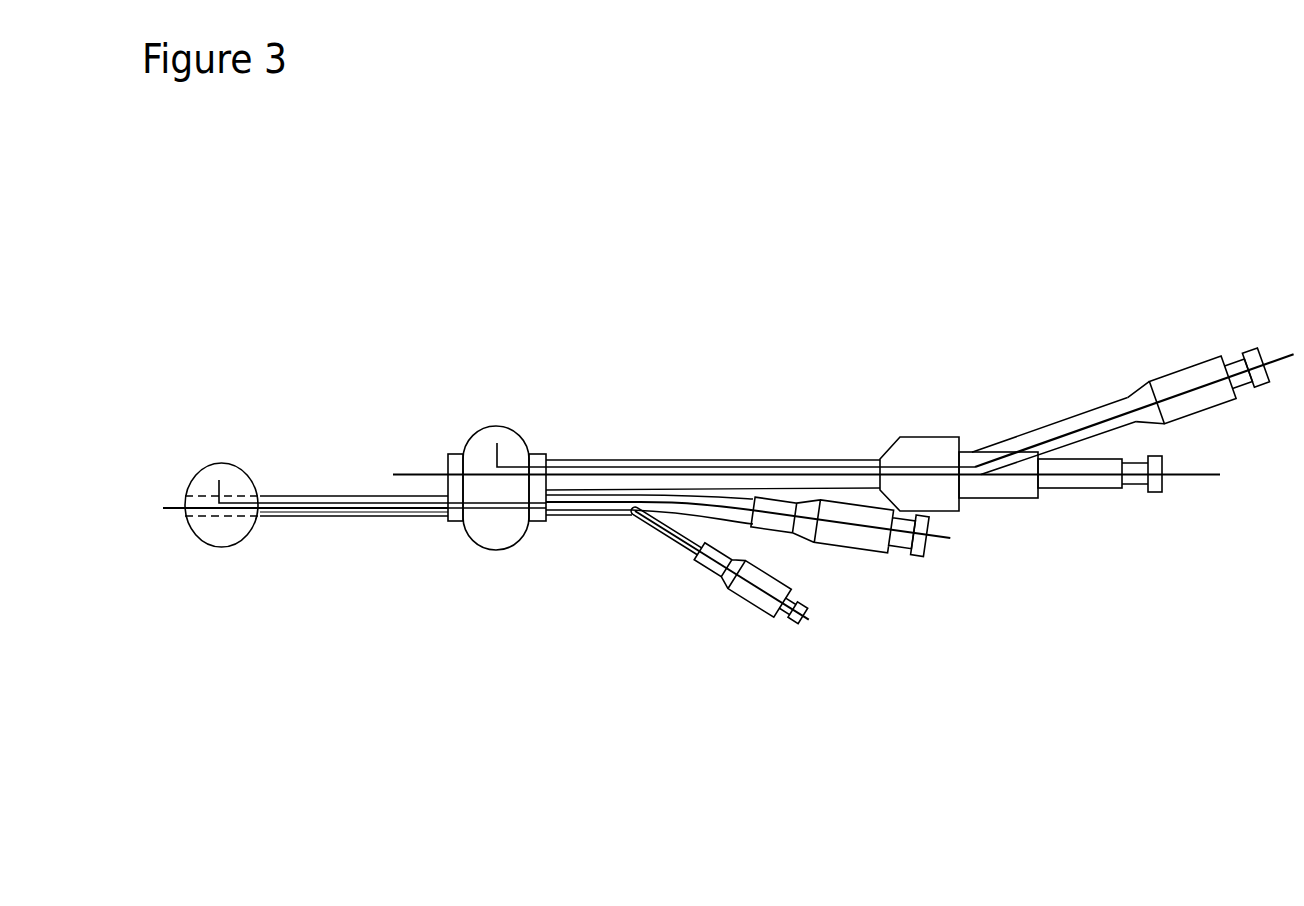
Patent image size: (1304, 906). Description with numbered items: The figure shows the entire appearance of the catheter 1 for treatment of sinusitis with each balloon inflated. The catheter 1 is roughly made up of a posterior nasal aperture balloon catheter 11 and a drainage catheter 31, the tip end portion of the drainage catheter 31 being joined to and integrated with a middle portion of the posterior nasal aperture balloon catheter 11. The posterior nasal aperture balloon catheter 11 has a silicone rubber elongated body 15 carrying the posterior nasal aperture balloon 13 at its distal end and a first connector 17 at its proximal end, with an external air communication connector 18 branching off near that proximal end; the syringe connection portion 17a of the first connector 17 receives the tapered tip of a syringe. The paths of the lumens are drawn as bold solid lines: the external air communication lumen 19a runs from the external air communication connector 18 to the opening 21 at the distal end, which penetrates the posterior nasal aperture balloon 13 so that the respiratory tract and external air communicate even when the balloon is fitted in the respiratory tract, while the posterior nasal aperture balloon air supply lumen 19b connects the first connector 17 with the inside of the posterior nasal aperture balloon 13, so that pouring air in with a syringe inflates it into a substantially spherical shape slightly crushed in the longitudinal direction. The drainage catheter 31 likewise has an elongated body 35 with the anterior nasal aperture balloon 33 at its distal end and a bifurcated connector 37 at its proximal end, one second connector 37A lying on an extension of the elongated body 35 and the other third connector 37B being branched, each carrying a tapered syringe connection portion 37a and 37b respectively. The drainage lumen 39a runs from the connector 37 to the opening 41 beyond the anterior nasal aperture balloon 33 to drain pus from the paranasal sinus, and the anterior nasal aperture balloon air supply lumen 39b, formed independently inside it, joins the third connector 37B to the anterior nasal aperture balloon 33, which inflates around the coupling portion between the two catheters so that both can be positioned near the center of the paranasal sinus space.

The catheter for treatment of sinusitis 1 is at (1057, 287).
The posterior nasal aperture balloon catheter 11 is at (190, 655).
The posterior nasal aperture balloon 13 is at (235, 547).
The elongated body 15 is at (320, 517).
The first connector 17 is at (835, 540).
The first branch connector cap 17a is at (918, 558).
The external air communication connector 18 is at (725, 582).
The external air communication lumen 19a is at (360, 510).
The posterior nasal aperture balloon air supply lumen 19b is at (343, 502).
The opening 21 is at (183, 510).
The drainage catheter 31 is at (1280, 348).
The anterior nasal aperture balloon 33 is at (513, 433).
The elongated body 35 is at (753, 459).
The connector 37 is at (1117, 353).
The second connector 37A is at (1083, 463).
The third connector 37B is at (1182, 383).
The syringe connection portion 37a is at (1156, 492).
The syringe connection portion 37b is at (1262, 392).
The drainage lumen 39a is at (592, 474).
The anterior nasal aperture balloon air supply lumen 39b is at (646, 466).
The opening 41 is at (448, 471).